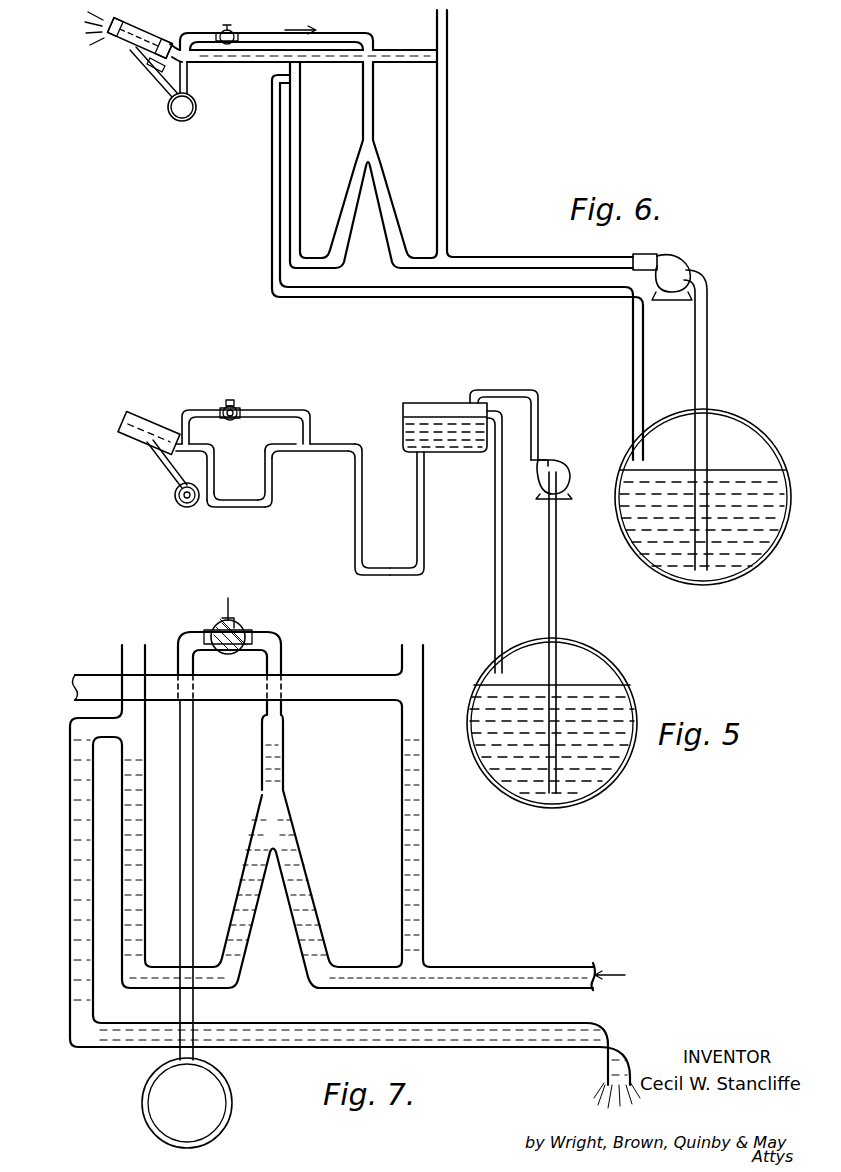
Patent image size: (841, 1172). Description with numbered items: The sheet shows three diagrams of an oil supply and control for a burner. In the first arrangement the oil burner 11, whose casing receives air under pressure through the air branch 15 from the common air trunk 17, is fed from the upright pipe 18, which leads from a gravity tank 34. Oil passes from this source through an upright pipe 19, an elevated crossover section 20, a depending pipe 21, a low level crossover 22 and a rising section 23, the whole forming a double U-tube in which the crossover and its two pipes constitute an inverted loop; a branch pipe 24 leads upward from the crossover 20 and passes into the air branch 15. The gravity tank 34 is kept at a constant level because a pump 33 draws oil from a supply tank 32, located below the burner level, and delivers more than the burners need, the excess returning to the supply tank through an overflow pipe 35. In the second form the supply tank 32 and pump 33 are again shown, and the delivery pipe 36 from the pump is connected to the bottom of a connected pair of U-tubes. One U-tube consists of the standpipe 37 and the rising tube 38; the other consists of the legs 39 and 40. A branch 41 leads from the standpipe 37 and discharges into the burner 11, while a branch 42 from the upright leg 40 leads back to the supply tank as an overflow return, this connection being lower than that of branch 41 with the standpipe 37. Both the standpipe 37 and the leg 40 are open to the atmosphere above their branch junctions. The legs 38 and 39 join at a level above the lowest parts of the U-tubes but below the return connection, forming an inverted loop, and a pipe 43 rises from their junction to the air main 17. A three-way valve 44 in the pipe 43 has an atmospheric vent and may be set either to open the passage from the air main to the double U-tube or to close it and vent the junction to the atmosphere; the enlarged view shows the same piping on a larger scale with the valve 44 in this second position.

In FIG. 6, the oil burner 11 is at (148, 38).
In FIG. 5, the oil burner 11 is at (143, 425).
In FIG. 6, the air branch 15 is at (150, 73).
In FIG. 5, the air branch 15 is at (165, 465).
In FIG. 6, the air trunk 17 is at (184, 122).
In FIG. 5, the air trunk 17 is at (178, 505).
In FIG. 7, the air trunk 17 is at (207, 1083).
In FIG. 5, the upright pipe 18 is at (419, 495).
In FIG. 5, the upright pipe 19 is at (362, 512).
In FIG. 5, the elevated crossover section 20 is at (334, 450).
In FIG. 5, the depending pipe 21 is at (274, 482).
In FIG. 5, the low level crossover 22 is at (230, 508).
In FIG. 5, the rising section 23 is at (212, 468).
In FIG. 5, the branch pipe 24 is at (285, 415).
In FIG. 6, the supply tank 32 is at (738, 438).
In FIG. 5, the supply tank 32 is at (592, 670).
In FIG. 6, the pump 33 is at (688, 272).
In FIG. 5, the pump 33 is at (552, 463).
In FIG. 5, the gravity tank 34 is at (423, 410).
In FIG. 5, the overflow pipe 35 is at (498, 508).
In FIG. 6, the delivery pipe 36 is at (512, 258).
In FIG. 7, the delivery pipe 36 is at (515, 966).
In FIG. 6, the standpipe 37 is at (448, 155).
In FIG. 7, the standpipe 37 is at (414, 868).
In FIG. 6, the rising tube 38 is at (389, 192).
In FIG. 7, the rising tube 38 is at (306, 906).
In FIG. 6, the leg 39 is at (352, 192).
In FIG. 7, the leg 39 is at (256, 860).
In FIG. 6, the upright leg 40 is at (300, 150).
In FIG. 7, the upright leg 40 is at (136, 842).
In FIG. 6, the branch 41 is at (399, 50).
In FIG. 7, the branch 41 is at (327, 684).
In FIG. 6, the branch 42 is at (272, 138).
In FIG. 7, the branch 42 is at (78, 840).
In FIG. 6, the pipe 43 is at (374, 92).
In FIG. 7, the pipe 43 is at (285, 745).
In FIG. 6, the three-way valve 44 is at (233, 34).
In FIG. 7, the three-way valve 44 is at (213, 628).